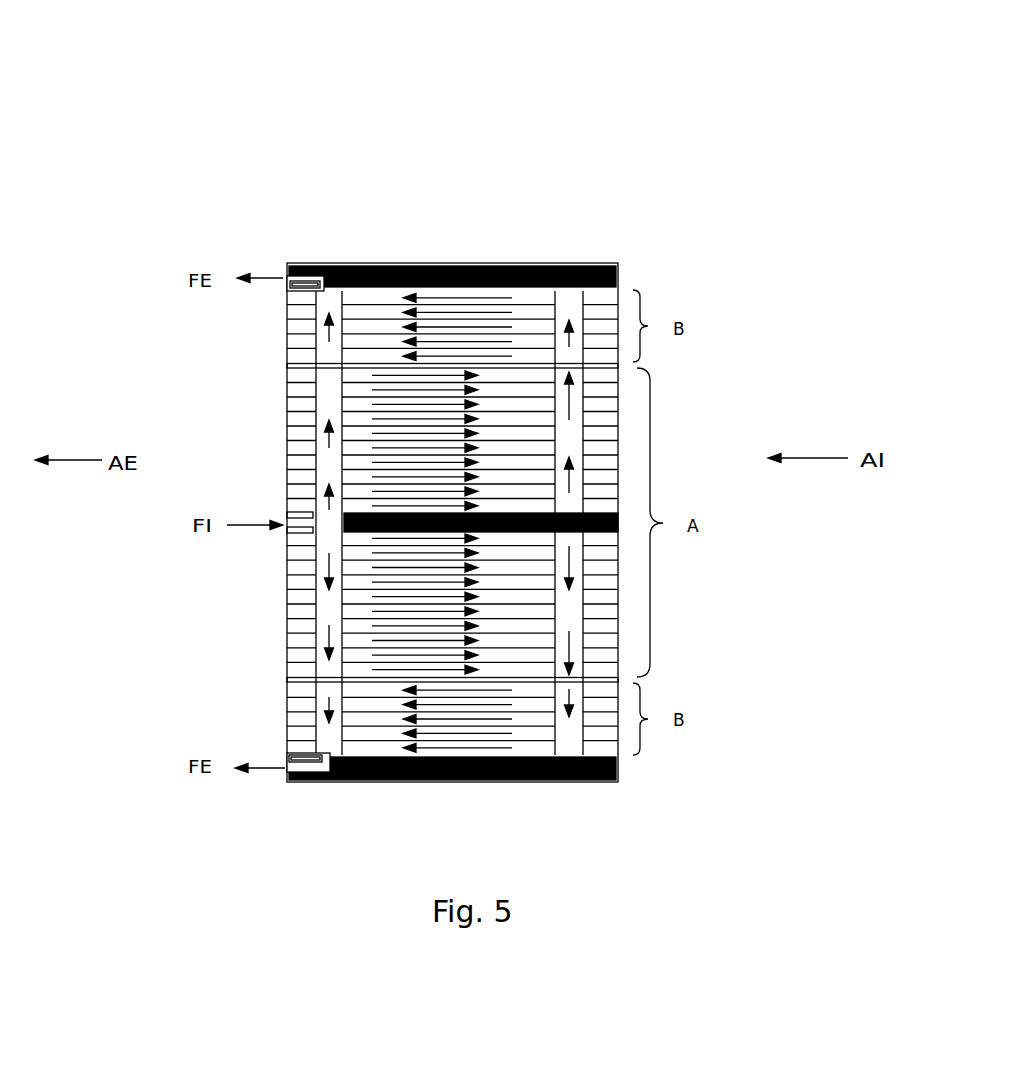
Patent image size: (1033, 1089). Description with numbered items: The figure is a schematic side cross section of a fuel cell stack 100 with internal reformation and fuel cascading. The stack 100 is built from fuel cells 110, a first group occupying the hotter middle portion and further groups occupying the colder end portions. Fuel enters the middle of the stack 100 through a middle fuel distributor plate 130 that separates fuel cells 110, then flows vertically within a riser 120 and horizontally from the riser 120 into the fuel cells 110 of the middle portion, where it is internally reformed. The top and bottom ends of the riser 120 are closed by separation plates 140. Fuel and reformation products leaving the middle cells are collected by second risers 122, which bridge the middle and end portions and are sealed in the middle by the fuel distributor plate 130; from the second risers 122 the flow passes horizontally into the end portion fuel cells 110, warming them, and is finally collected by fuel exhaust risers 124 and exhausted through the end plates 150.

The stack 100 is at (246, 108).
The fuel cells 110 is at (300, 462).
The riser 120 is at (327, 405).
The second risers 122 is at (568, 305).
The fuel exhaust risers 124 is at (320, 302).
The middle fuel distributor plate 130 is at (385, 520).
The separation plates 140 is at (308, 363).
The end plates 150 is at (398, 277).